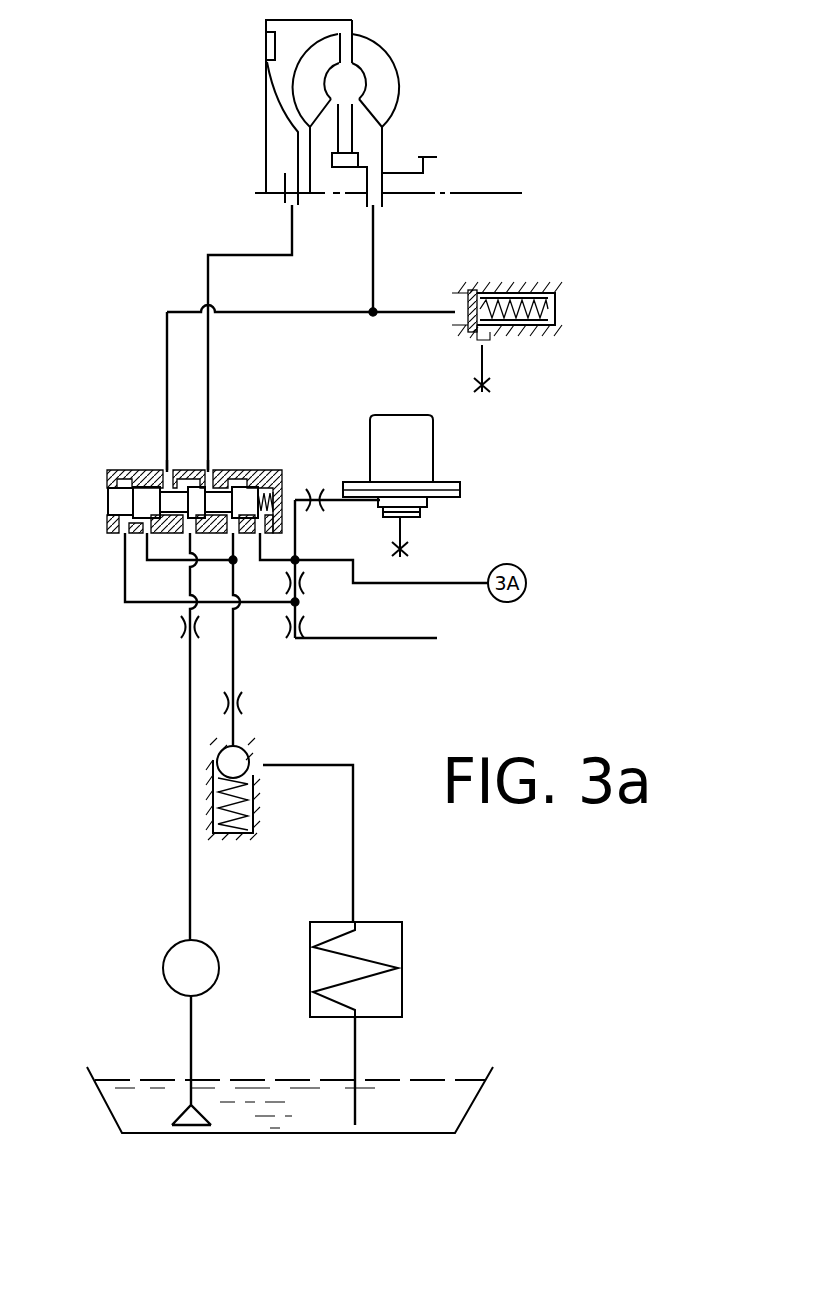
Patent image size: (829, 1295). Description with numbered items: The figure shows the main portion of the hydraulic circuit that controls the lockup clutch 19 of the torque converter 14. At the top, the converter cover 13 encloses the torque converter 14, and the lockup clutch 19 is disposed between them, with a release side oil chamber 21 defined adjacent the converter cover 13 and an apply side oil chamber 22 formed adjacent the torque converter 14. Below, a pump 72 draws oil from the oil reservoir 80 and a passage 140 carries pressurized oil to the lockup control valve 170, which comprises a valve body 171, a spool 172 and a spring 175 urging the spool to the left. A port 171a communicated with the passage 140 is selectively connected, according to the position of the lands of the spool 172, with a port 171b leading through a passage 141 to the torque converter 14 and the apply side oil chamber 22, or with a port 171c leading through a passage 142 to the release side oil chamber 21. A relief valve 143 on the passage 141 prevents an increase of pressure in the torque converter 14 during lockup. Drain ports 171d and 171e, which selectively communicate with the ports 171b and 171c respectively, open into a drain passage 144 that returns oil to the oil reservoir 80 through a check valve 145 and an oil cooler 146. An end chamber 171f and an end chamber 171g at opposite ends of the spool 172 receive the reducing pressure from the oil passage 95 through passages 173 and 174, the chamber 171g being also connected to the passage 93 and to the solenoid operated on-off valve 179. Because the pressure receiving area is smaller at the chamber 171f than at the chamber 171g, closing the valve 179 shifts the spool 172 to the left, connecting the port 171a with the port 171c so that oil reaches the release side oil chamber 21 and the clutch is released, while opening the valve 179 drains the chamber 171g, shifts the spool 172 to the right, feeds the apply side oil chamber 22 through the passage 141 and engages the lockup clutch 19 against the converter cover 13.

The converter cover 13 is at (265, 115).
The torque converter 14 is at (398, 84).
The lockup clutch 19 is at (265, 50).
The release side oil chamber 21 is at (285, 152).
The apply side oil chamber 22 is at (302, 33).
The pump 72 is at (172, 988).
The oil reservoir 80 is at (468, 1110).
The passage 93 is at (423, 582).
The oil passage 95 is at (406, 618).
The passage 140 is at (190, 910).
The passage 141 is at (167, 338).
The passage 142 is at (250, 376).
The relief valve 143 is at (545, 262).
The drain passage 144 is at (235, 672).
The check valve 145 is at (248, 752).
The oil cooler 146 is at (402, 983).
The lockup control valve 170 is at (101, 457).
The valve body 171 is at (257, 472).
The port 171a is at (187, 540).
The port 171b is at (162, 470).
The port 171c is at (235, 468).
The drain port 171d is at (147, 540).
The drain port 171e is at (232, 545).
The end chamber 171f is at (107, 535).
The end chamber 171g is at (258, 542).
The spool 172 is at (122, 502).
The passage 173 is at (140, 607).
The passage 174 is at (275, 556).
The spring 175 is at (310, 476).
The solenoid operated on-off valve 179 is at (420, 458).